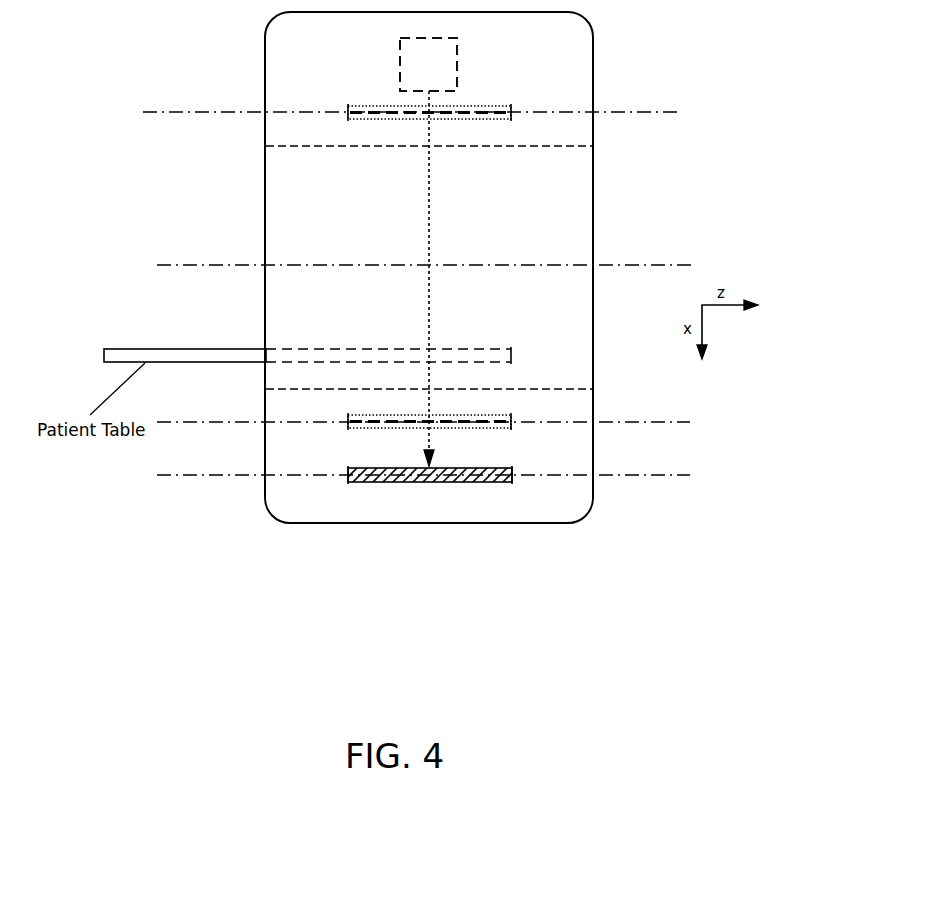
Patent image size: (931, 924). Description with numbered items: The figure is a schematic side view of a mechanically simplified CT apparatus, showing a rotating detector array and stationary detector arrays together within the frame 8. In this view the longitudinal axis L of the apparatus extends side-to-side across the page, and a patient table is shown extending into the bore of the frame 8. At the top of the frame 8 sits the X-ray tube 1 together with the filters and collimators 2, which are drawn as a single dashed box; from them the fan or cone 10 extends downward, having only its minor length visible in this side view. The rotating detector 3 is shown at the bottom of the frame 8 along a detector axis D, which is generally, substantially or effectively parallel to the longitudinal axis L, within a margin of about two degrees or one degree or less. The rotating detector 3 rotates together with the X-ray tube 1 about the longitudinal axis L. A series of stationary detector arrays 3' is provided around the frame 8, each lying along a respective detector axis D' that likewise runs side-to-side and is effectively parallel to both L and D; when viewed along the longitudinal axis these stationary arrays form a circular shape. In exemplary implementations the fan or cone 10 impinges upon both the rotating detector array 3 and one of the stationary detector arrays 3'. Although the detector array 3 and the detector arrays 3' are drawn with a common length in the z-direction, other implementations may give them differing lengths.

The frame 8 is at (265, 80).
The X-ray tube 1 is at (457, 63).
The filters and collimators 2 is at (428, 64).
The fan or cone 10 is at (429, 212).
The stationary detector arrays 3' is at (502, 249).
The rotating detector 3 is at (495, 452).
The detector axes D' is at (460, 245).
The detector axis D is at (466, 450).
The longitudinal axis L is at (690, 265).